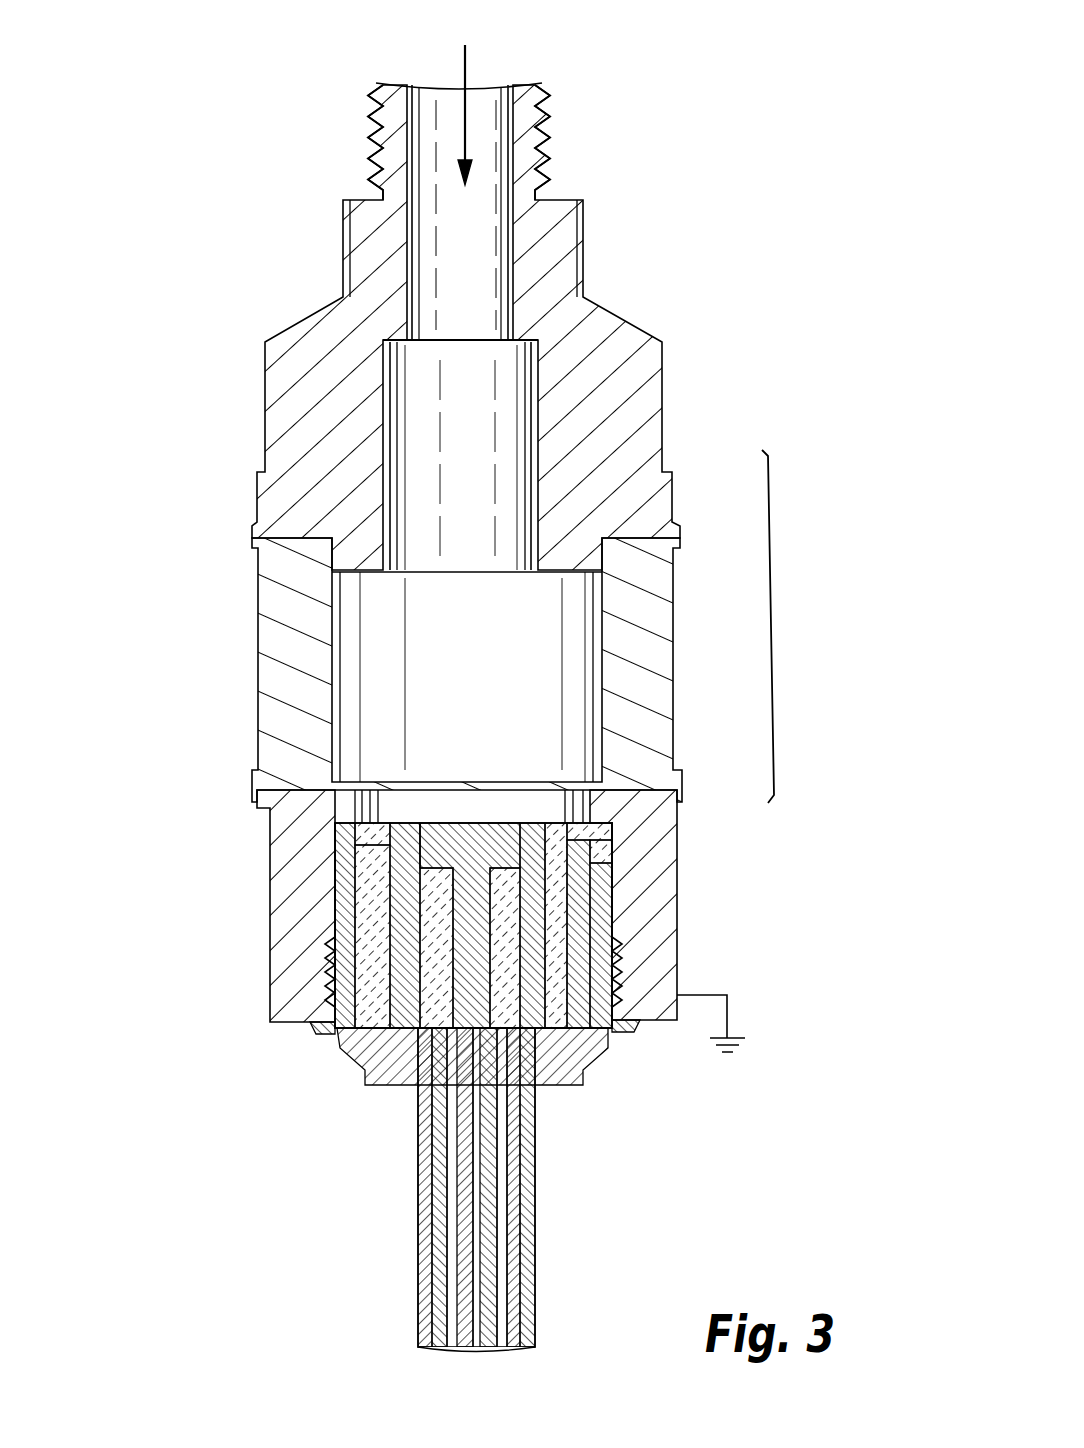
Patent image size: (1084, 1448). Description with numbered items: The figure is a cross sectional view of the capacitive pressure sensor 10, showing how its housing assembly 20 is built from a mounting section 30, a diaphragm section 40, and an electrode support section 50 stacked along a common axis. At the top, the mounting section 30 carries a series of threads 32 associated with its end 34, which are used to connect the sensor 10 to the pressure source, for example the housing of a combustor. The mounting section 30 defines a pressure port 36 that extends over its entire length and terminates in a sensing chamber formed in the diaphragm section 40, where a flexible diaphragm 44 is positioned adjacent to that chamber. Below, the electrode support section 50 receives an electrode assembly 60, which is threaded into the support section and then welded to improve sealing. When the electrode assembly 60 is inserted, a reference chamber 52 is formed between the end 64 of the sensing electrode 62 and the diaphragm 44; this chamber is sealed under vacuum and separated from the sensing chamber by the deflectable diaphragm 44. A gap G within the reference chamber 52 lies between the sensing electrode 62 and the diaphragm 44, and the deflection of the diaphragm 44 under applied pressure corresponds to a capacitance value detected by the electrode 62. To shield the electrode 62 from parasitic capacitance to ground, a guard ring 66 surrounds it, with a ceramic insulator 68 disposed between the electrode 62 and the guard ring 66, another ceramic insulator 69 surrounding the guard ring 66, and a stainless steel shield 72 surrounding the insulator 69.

The pressure sensor 10 is at (230, 240).
The housing assembly 20 is at (783, 630).
The mounting section 30 is at (262, 386).
The threads 32 is at (368, 134).
The end 34 is at (540, 80).
The pressure port 36 is at (431, 108).
The diaphragm section 40 is at (258, 632).
The diaphragm 44 is at (385, 808).
The gap G is at (452, 830).
The reference chamber 52 is at (488, 812).
The sensing electrode 62 is at (400, 850).
The end of the electrode 64 is at (522, 828).
The stainless steel shield 72 is at (612, 848).
The guard ring 66 is at (612, 908).
The electrode support section 50 is at (268, 932).
The electrode assembly 60 is at (362, 1068).
The ceramic insulator 68 is at (540, 1070).
The ceramic insulator 69 is at (556, 1036).